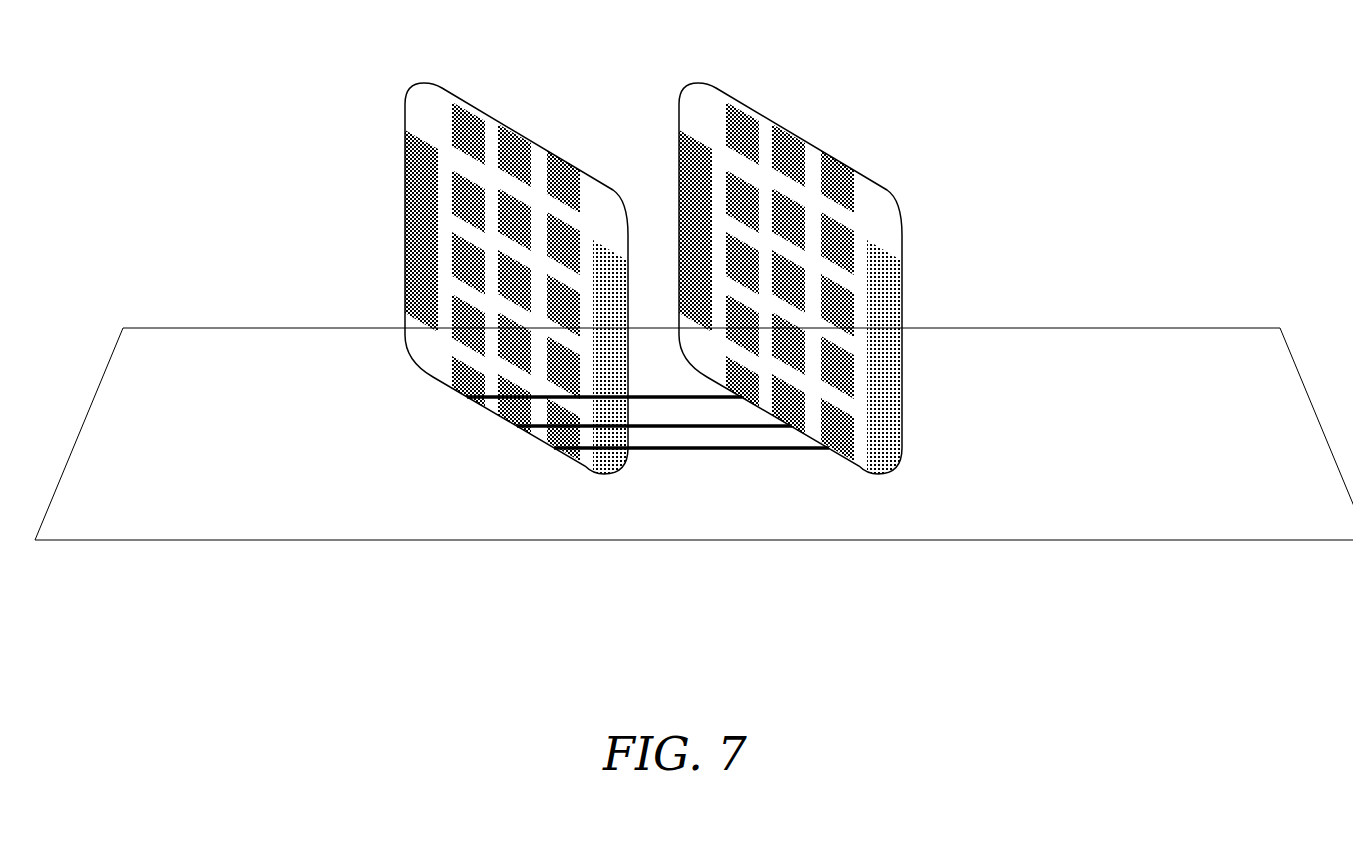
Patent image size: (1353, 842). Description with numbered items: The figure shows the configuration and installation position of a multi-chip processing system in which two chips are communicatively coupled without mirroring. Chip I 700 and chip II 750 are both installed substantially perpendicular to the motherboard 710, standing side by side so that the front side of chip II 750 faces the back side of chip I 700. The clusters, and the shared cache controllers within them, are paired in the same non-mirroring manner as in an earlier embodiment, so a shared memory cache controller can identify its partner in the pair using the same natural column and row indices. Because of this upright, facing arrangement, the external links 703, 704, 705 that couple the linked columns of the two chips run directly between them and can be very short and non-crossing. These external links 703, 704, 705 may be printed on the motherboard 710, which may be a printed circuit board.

The chip I 700 is at (446, 76).
The chip II 750 is at (726, 76).
The motherboard 710 is at (192, 385).
The external link 703 is at (647, 396).
The external link 704 is at (661, 430).
The external link 705 is at (686, 452).